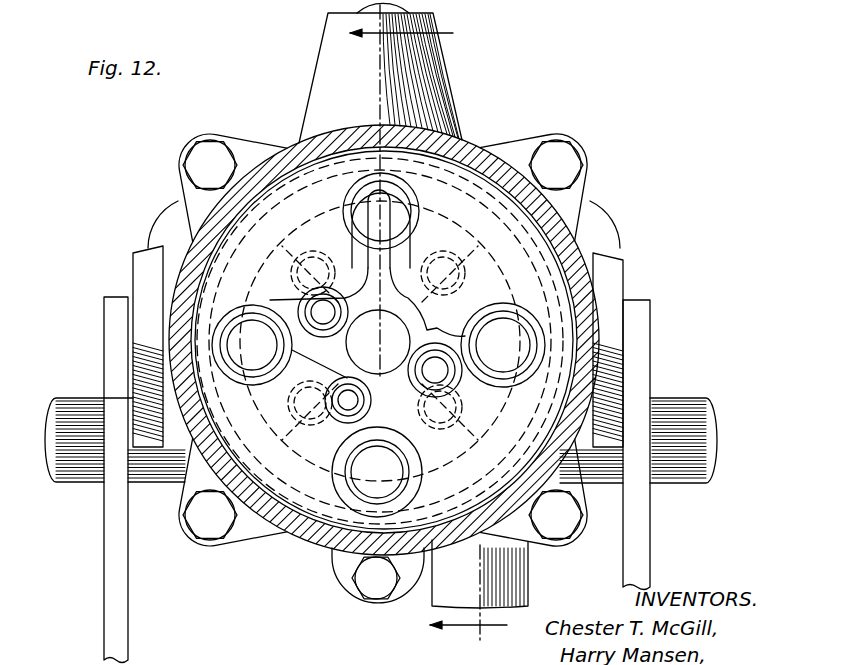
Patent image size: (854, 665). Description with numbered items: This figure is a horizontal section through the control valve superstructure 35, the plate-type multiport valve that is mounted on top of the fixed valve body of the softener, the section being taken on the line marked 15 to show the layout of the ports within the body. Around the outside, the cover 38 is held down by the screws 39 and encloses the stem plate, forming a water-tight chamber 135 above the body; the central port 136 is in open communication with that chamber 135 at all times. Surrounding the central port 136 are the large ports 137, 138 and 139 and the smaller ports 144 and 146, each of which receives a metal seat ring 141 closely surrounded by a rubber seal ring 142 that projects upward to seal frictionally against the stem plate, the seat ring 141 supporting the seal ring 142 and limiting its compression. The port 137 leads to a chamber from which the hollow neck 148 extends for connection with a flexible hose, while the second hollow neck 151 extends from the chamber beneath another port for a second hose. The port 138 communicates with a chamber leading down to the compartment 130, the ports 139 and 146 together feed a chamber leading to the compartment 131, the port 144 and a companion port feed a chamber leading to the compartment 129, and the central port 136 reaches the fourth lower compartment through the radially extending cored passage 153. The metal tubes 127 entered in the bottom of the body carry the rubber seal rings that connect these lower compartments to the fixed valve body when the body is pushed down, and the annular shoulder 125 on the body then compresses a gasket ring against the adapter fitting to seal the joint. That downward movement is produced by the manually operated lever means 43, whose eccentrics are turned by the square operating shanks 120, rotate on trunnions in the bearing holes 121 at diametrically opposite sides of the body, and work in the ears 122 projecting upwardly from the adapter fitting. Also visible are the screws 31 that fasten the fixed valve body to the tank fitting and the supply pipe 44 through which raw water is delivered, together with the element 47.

The section line 15 is at (437, 345).
The hollow neck 148 is at (453, 100).
The screws 39 is at (203, 157).
The water-tight chamber 135 is at (303, 183).
The compartment 131 is at (457, 488).
The screws 31 is at (157, 213).
The compartment 129 is at (233, 188).
The compartment 130 is at (533, 187).
The ears 122 is at (147, 262).
The manually operated lever means 43 is at (643, 365).
The supply pipe 44 is at (88, 470).
The right shaft 47 is at (678, 472).
The metal seat ring 141 is at (562, 325).
The rubber seal ring 142 is at (417, 352).
The square operating shanks 120 is at (247, 327).
The metal tubes 127 is at (298, 266).
The port 137 is at (350, 228).
The port 144 is at (255, 345).
The bearing holes 121 is at (262, 362).
The central port 136 is at (405, 327).
The port 138 is at (502, 322).
The annular shoulder 125 is at (465, 343).
The port 146 is at (367, 401).
The cored passage 153 is at (300, 495).
The port 139 is at (390, 495).
The control valve superstructure 35 is at (290, 543).
The cover 38 is at (310, 548).
The hollow neck 151 is at (513, 580).